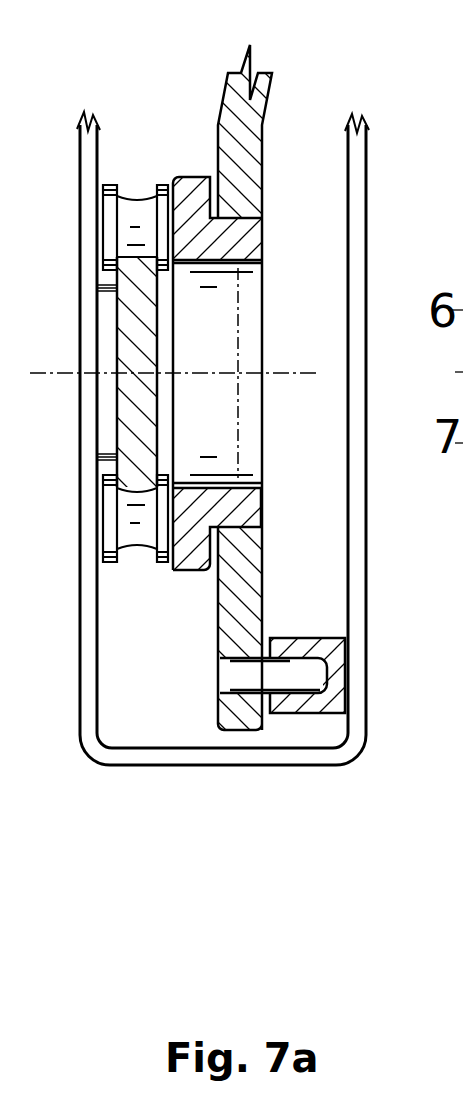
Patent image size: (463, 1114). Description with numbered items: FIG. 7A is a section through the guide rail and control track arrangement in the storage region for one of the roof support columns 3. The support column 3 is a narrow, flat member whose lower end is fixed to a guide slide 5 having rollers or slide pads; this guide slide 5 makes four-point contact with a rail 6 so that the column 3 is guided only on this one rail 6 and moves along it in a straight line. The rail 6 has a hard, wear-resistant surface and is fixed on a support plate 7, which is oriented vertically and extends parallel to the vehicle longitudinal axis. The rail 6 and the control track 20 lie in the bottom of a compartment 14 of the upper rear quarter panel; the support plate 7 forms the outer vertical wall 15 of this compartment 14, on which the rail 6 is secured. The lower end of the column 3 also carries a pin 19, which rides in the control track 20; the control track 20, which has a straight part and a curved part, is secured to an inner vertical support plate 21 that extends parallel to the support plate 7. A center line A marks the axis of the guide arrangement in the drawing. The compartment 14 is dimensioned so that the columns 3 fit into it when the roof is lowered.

The support column 3 is at (235, 187).
The guide slide 5 is at (217, 240).
The rail 6 is at (138, 323).
The support plate 7 is at (88, 425).
The compartment 14 is at (333, 494).
The outer vertical wall 15 is at (137, 222).
The pin 19 is at (295, 680).
The control track 20 is at (333, 683).
The plate 21 is at (357, 513).
The axis A is at (251, 363).